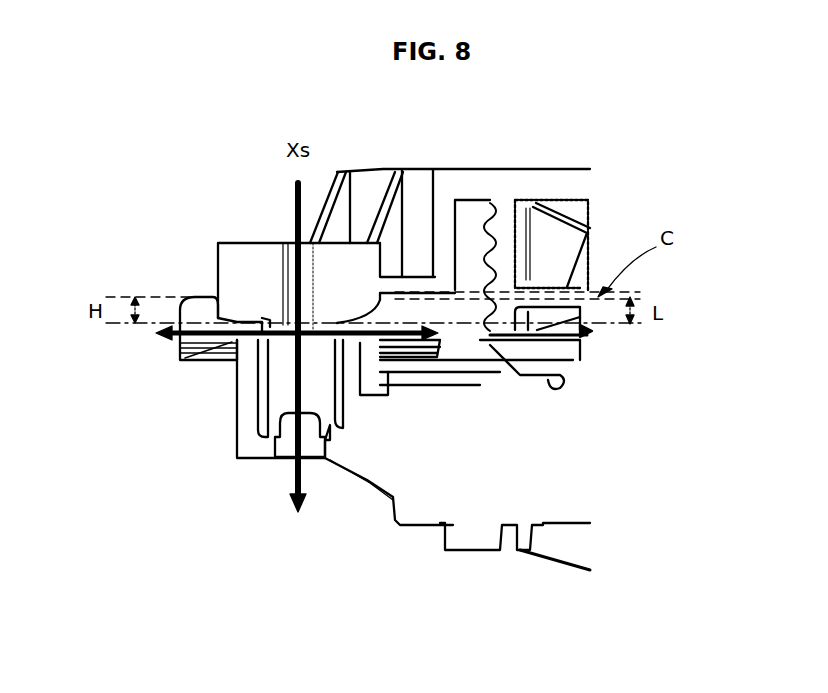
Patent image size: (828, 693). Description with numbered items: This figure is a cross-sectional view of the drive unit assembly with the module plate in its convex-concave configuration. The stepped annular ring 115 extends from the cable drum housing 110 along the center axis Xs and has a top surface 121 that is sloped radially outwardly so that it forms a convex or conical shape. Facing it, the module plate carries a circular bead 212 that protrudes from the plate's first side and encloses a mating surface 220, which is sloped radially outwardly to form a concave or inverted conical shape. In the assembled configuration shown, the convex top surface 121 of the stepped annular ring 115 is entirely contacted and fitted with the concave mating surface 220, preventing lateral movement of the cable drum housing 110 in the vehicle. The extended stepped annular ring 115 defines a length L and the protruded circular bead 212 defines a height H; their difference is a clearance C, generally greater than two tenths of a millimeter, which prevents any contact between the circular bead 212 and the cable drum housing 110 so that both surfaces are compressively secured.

The cable drum housing 110 is at (444, 240).
The stepped annular ring 115 is at (257, 270).
The top surface 121 is at (231, 308).
The circular bead 212 is at (212, 318).
The mating surface 220 is at (224, 334).